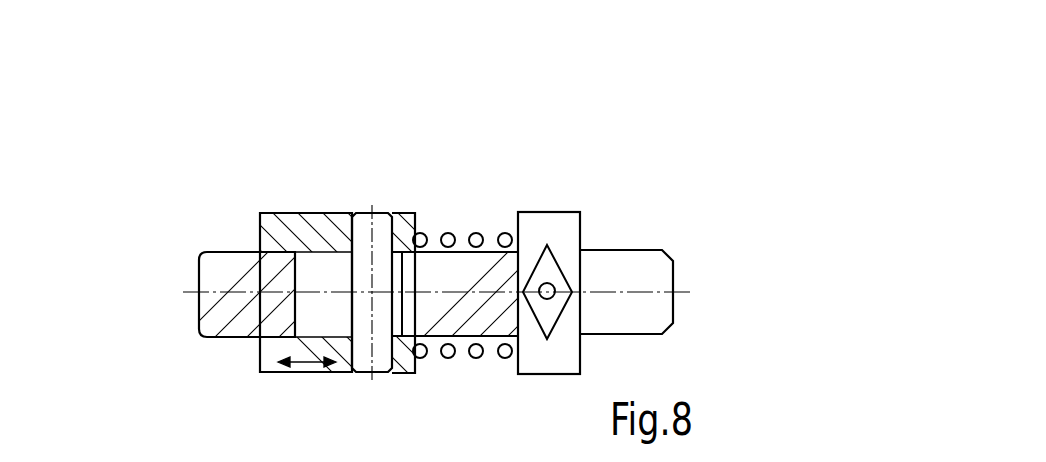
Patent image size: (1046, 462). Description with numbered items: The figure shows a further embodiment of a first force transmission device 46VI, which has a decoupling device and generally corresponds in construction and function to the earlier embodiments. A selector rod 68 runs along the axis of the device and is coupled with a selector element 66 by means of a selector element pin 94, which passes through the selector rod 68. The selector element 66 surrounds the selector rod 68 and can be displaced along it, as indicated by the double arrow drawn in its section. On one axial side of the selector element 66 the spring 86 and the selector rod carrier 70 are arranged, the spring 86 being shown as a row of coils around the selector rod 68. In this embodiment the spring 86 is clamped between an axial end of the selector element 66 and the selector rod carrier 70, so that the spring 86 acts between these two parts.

The selector element 66 is at (300, 228).
The selector rod 68 is at (237, 312).
The selector rod carrier 70 is at (543, 228).
The spring 86 is at (472, 230).
The selector element pin 94 is at (370, 227).
The first force transmission device 46VI is at (725, 213).